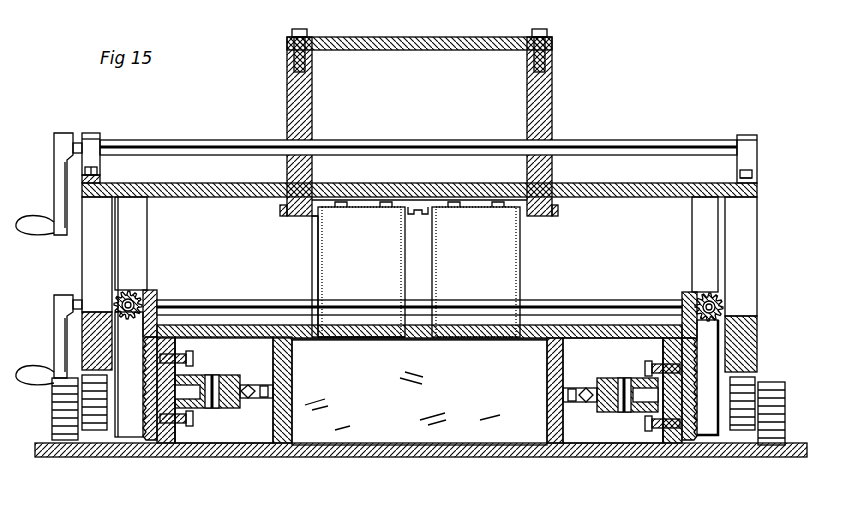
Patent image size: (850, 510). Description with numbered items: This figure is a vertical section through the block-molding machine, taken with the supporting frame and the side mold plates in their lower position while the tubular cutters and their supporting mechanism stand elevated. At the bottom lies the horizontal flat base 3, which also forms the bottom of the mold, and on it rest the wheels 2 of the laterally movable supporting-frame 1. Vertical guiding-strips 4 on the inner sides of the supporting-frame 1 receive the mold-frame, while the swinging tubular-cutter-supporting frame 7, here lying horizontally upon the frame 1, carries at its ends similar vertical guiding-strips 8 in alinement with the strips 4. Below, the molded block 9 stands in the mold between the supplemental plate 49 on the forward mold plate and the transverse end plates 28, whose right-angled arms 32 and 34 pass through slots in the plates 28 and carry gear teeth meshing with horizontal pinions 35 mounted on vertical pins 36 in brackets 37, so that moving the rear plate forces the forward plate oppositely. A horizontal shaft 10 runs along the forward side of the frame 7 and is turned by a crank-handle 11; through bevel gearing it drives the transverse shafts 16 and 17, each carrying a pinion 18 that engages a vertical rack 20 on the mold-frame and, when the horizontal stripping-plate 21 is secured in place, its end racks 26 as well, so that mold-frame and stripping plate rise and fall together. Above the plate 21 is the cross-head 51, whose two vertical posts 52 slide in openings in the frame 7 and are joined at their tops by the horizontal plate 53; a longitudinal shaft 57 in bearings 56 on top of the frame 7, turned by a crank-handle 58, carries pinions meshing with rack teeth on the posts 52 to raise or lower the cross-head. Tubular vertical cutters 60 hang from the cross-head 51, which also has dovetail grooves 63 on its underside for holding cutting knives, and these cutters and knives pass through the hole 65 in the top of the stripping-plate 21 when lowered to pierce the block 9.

The supporting-frame 1 is at (757, 360).
The wheels 2 is at (52, 410).
The base 3 is at (248, 457).
The vertical guiding-strips 4 is at (416, 388).
The tubular-cutter-supporting frame 7 is at (228, 186).
The vertical guiding-strips 8 is at (416, 244).
The molded block 9 is at (129, 317).
The horizontal shaft 10 is at (292, 301).
The crank-handle 11 is at (56, 338).
The transverse horizontal shaft 16 is at (124, 295).
The transverse horizontal shaft 17 is at (708, 293).
The pinions 18 is at (134, 298).
The vertical rack 20 is at (709, 377).
The stripping-plate 21 is at (228, 325).
The vertical rack 26 is at (158, 296).
The vertical transverse parallel plates 28 is at (292, 357).
The right-angled arms 32 is at (184, 443).
The arms 34 is at (266, 399).
The horizontal pinions 35 is at (195, 420).
The vertical pins 36 is at (212, 375).
The brackets 37 is at (240, 375).
The supplemental plate 49 is at (419, 390).
The cross-head 51 is at (312, 216).
The vertical posts 52 is at (312, 97).
The horizontal plate 53 is at (412, 37).
The bearings 56 is at (102, 138).
The longitudinal horizontal shaft 57 is at (418, 136).
The crank-handle 58 is at (56, 183).
The tubular vertical cutters 60 is at (419, 269).
The transverse groove 63 is at (416, 216).
The hole 65 is at (322, 336).